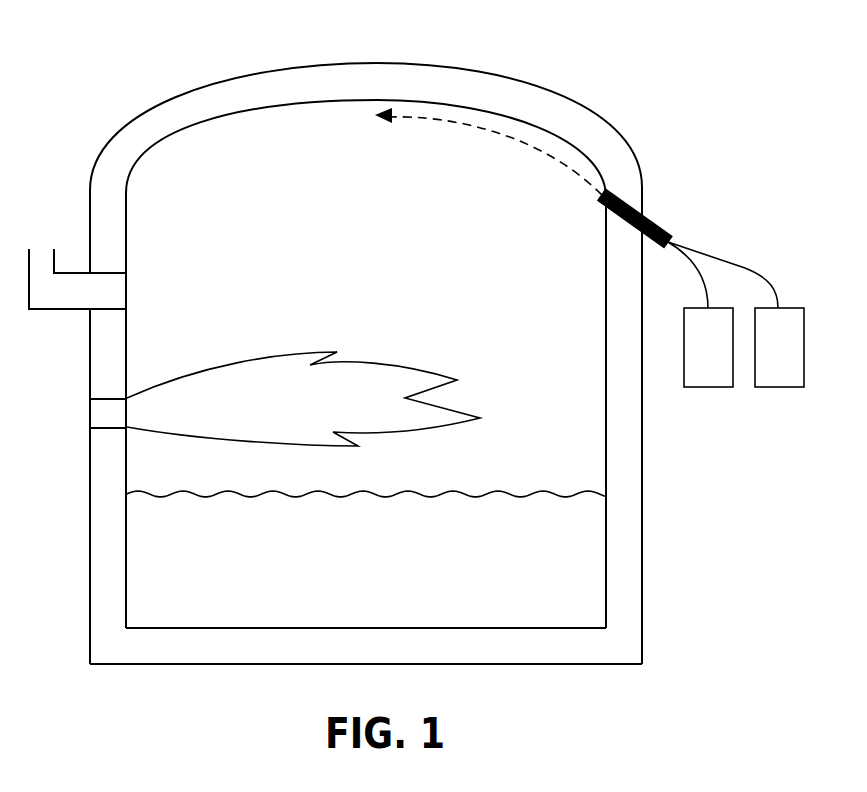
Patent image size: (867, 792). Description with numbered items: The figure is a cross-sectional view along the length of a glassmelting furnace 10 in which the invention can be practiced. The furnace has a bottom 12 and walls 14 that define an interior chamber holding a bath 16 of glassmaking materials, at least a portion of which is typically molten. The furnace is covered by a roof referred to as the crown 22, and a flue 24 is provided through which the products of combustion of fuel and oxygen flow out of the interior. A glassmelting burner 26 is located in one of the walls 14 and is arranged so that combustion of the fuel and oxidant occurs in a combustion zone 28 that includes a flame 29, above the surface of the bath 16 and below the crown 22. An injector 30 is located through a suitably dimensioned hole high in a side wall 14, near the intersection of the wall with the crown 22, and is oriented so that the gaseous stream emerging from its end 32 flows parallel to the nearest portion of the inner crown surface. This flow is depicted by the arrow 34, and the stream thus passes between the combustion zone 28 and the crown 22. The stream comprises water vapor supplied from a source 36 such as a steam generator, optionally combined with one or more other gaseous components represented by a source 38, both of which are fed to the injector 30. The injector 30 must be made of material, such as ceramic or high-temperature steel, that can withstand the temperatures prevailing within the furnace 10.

The glassmelting furnace 10 is at (142, 100).
The bottom 12 is at (355, 659).
The walls 14 is at (96, 357).
The bath 16 is at (353, 567).
The crown 22 is at (281, 96).
The flue 24 is at (45, 304).
The glassmelting burner 26 is at (96, 424).
The combustion zone 28 is at (300, 275).
The flame 29 is at (303, 412).
The injector 30 is at (653, 217).
The end 32 is at (602, 197).
The arrow 34 is at (517, 140).
The source 36 is at (696, 357).
The source 38 is at (767, 357).